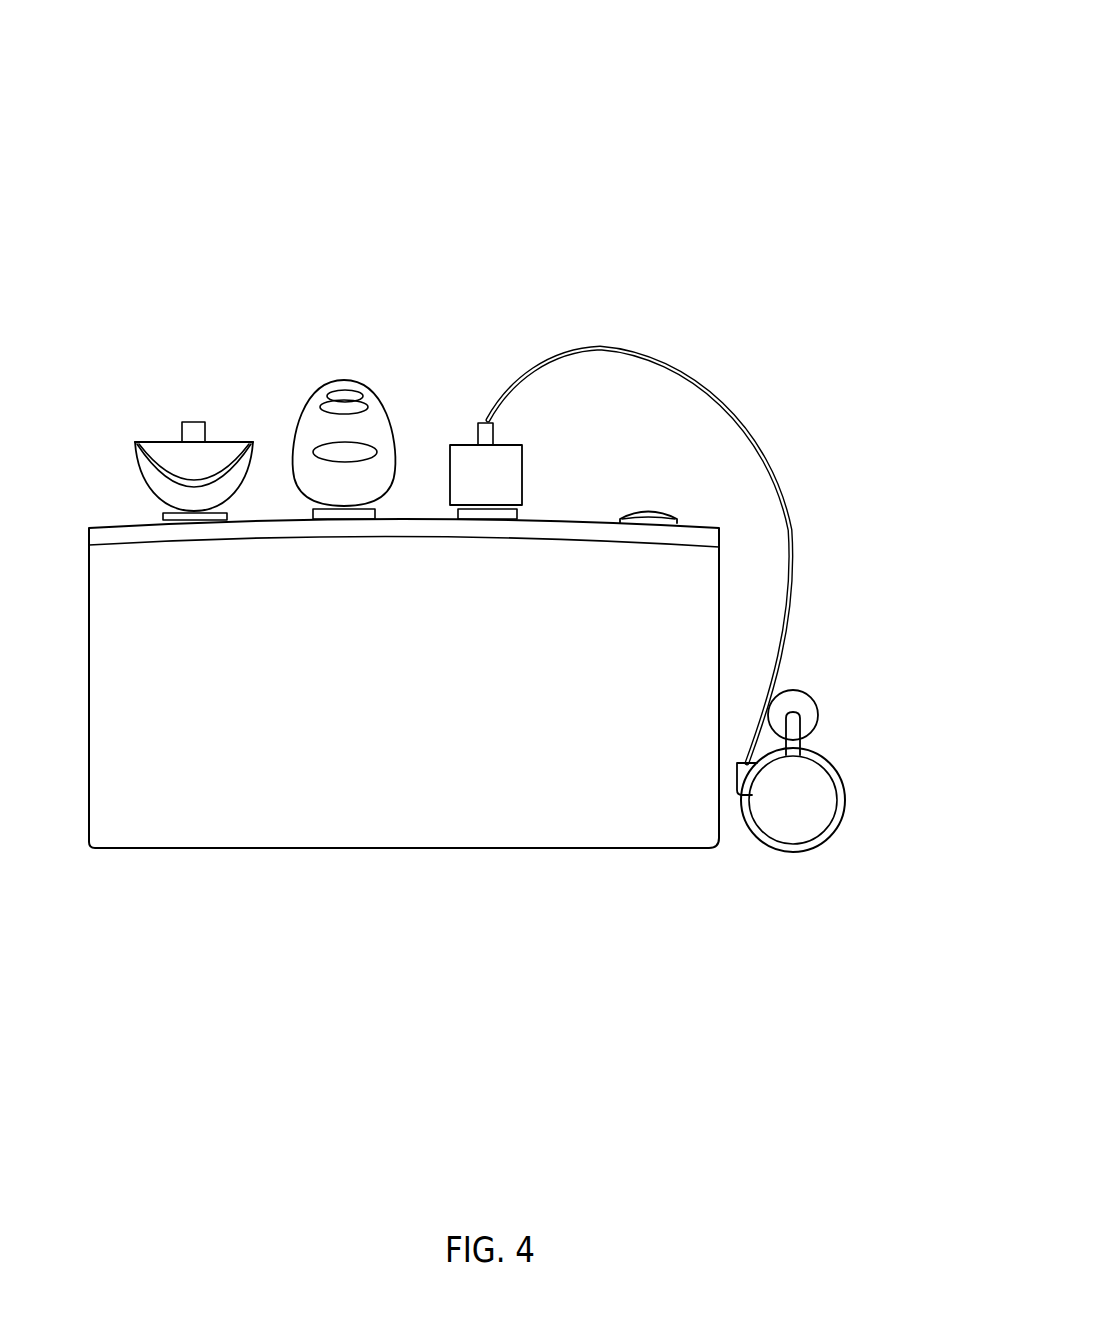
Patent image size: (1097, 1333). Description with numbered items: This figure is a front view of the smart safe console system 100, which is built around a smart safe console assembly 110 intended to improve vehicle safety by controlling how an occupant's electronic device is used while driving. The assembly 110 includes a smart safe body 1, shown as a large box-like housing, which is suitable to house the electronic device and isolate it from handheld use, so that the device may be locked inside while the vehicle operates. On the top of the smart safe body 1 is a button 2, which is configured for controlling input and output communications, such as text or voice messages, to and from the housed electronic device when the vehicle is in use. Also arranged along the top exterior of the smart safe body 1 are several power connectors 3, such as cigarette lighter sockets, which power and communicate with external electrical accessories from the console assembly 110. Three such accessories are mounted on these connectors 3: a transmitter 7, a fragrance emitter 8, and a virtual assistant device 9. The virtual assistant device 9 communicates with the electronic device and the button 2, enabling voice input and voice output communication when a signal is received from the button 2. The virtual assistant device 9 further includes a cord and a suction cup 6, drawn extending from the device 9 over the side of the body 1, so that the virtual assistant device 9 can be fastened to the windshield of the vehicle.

The smart safe body 1 is at (235, 825).
The button 2 is at (660, 512).
The power connector 3 is at (163, 515).
The suction cup 6 is at (772, 848).
The transmitter 7 is at (160, 447).
The fragrance emitter 8 is at (323, 385).
The virtual assistant device 9 is at (467, 445).
The smart safe console system 100 is at (843, 32).
The smart safe console assembly 110 is at (843, 68).